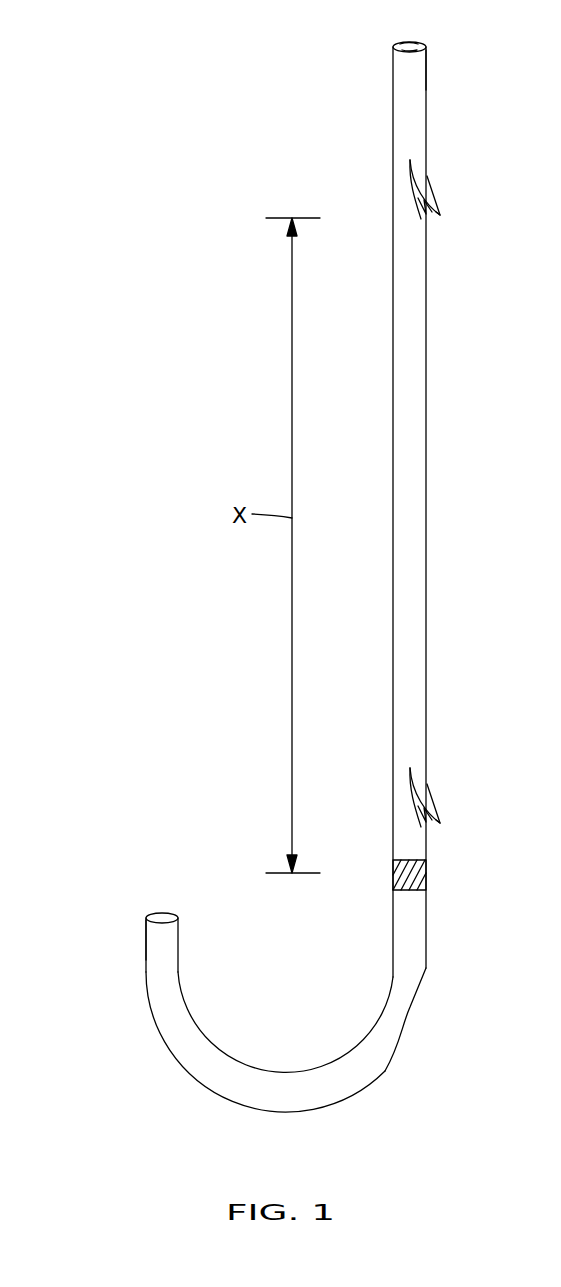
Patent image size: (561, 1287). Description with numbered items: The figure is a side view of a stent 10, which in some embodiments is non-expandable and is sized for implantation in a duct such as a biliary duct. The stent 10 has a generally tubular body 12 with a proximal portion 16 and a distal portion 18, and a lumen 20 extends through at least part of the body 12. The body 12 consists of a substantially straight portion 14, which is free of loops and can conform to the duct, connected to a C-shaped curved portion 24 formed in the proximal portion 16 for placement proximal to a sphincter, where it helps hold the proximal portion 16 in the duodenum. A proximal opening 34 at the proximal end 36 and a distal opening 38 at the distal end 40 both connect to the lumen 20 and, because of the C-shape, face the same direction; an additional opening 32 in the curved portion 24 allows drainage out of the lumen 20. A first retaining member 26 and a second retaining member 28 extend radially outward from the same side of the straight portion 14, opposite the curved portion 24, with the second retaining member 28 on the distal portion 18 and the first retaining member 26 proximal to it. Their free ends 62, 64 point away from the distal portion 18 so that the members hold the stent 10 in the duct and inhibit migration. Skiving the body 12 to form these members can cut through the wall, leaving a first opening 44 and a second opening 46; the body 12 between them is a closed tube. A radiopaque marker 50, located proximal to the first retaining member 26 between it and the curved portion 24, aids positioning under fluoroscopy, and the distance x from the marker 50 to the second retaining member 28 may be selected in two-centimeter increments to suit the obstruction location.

The stent 10 is at (172, 346).
The tubular body 12 is at (426, 458).
The substantially straight portion 14 is at (426, 608).
The proximal portion 16 is at (92, 899).
The distal portion 18 is at (256, 62).
The lumen 20 is at (418, 42).
The curved portion 24 is at (197, 1078).
The first retaining member 26 is at (428, 780).
The second retaining member 28 is at (428, 172).
The opening 32 is at (410, 1012).
The proximal opening 34 is at (161, 917).
The proximal end 36 is at (145, 930).
The distal opening 38 is at (408, 44).
The distal end 40 is at (426, 60).
The first opening 44 is at (423, 822).
The second opening 46 is at (423, 213).
The radiopaque marker 50 is at (400, 875).
The free end of the first retaining member 62 is at (437, 812).
The free end of the second retaining member 64 is at (437, 205).